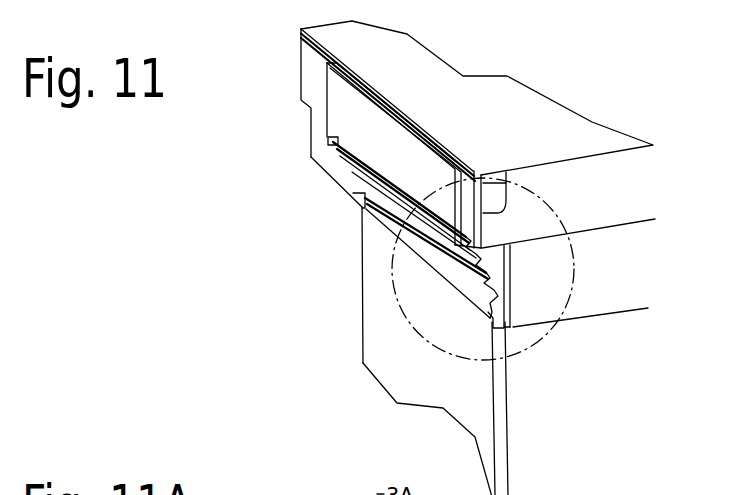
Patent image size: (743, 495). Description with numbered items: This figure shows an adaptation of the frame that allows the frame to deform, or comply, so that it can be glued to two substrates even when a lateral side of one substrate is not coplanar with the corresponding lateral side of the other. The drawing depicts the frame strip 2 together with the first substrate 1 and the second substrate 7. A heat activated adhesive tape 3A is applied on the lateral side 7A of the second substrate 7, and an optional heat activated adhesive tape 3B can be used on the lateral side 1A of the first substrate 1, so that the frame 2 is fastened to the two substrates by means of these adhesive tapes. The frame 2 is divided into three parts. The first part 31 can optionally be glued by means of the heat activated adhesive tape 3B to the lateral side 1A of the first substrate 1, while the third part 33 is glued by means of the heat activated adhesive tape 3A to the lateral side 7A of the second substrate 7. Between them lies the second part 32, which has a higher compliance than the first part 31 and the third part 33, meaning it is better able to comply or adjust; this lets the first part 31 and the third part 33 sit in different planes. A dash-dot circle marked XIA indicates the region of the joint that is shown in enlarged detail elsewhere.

The second substrate 7 is at (540, 124).
The lateral side of the second substrate 7A is at (313, 74).
The lateral side of the first substrate 1A is at (327, 132).
The third part 33 is at (382, 136).
The second part 32 is at (383, 210).
The first part 31 is at (422, 307).
The frame strip 2 is at (457, 393).
The first substrate 1 is at (603, 268).
The heat activated adhesive tape 3A is at (509, 182).
The heat activated adhesive tape 3B is at (513, 278).
The detail circle XIA is at (520, 330).